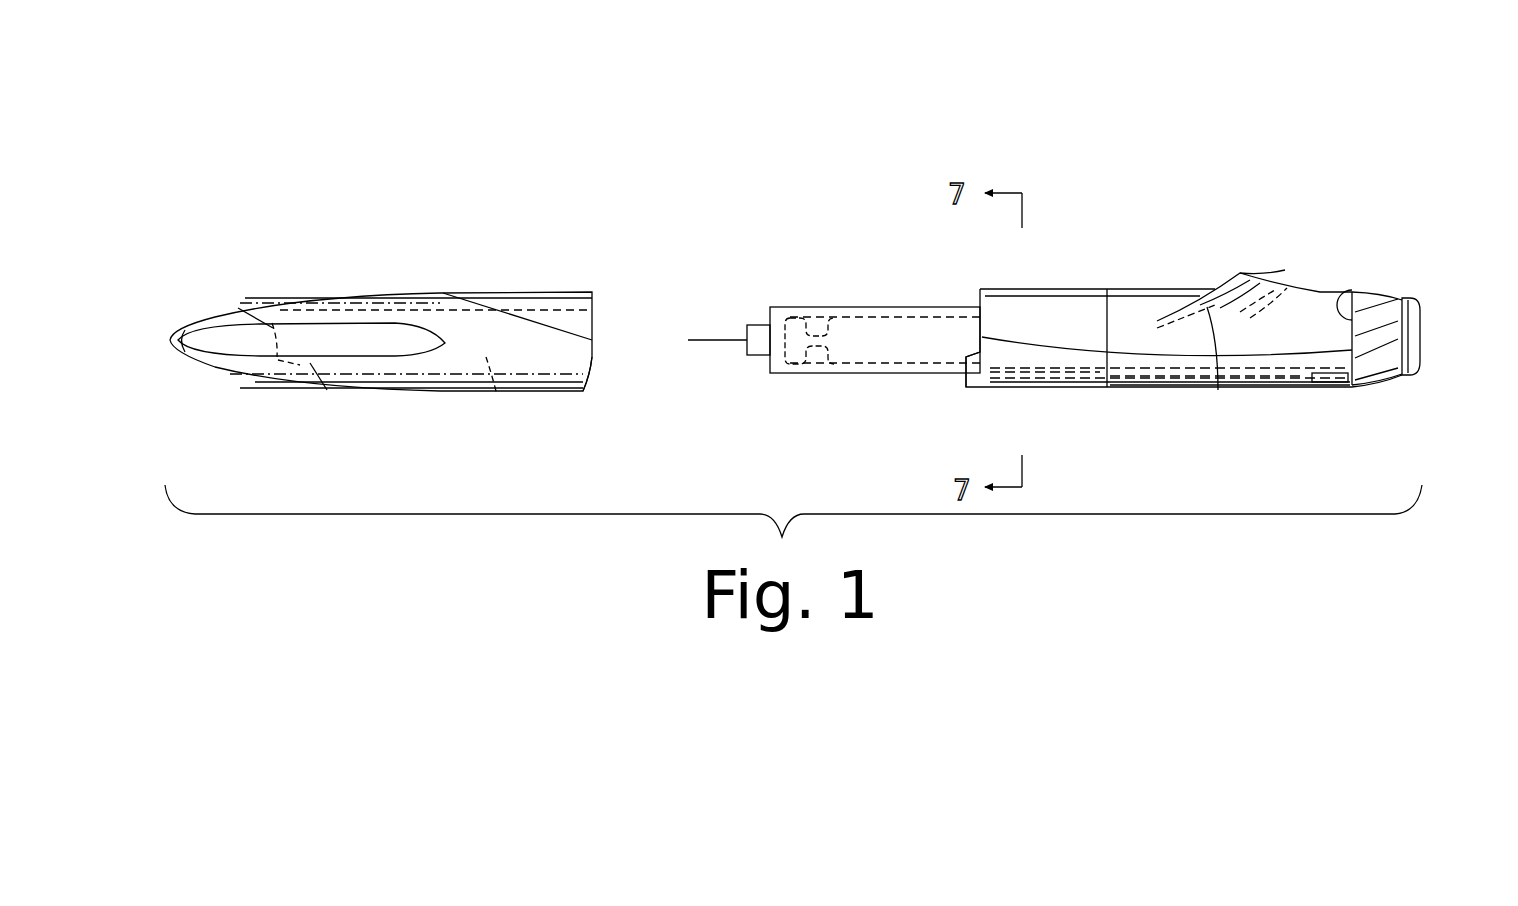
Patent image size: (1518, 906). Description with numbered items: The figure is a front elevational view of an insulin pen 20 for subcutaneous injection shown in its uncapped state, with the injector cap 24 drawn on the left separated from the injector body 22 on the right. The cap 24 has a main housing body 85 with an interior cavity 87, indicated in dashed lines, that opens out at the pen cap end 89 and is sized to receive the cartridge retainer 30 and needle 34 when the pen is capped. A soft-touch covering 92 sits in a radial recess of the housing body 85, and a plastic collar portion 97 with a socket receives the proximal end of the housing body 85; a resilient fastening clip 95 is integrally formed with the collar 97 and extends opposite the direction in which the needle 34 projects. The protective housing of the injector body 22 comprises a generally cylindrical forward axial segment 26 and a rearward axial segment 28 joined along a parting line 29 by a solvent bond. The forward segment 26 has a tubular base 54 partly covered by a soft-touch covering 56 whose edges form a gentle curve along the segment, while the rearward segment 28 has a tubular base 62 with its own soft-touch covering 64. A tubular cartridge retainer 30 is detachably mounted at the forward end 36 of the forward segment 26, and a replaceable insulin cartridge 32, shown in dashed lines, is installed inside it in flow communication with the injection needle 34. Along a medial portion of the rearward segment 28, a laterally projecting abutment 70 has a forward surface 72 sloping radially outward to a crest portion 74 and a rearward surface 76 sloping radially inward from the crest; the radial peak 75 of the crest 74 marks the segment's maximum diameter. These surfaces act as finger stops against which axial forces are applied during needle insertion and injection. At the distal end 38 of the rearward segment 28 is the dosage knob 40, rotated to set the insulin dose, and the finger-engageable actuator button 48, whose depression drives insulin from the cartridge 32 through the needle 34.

The insulin pen 20 is at (785, 158).
The injector body 22 is at (1226, 220).
The injector cap 24 is at (392, 250).
The forward axial segment 26 is at (1000, 393).
The rearward axial segment 28 is at (1159, 392).
The parting line 29 is at (1100, 310).
The cartridge retainer 30 is at (815, 307).
The insulin cartridge 32 is at (852, 350).
The injection needle 34 is at (715, 340).
The forward end 36 is at (978, 352).
The distal end 38 is at (1352, 290).
The dosage knob 40 is at (1392, 393).
The actuator button 48 is at (1422, 336).
The tubular base 54 is at (1020, 378).
The soft-touch covering 56 is at (1015, 300).
The tubular base 62 is at (1108, 386).
The soft-touch covering 64 is at (1166, 306).
The abutment 70 is at (1244, 258).
The forward surface 72 is at (1190, 306).
The crest portion 74 is at (1218, 390).
The radial peak 75 is at (1242, 273).
The rearward surface 76 is at (1285, 283).
The main housing body 85 is at (372, 390).
The interior cavity 87 is at (497, 395).
The pen cap end 89 is at (578, 359).
The soft-touch covering 92 is at (543, 298).
The fastening clip 95 is at (253, 340).
The collar portion 97 is at (200, 318).